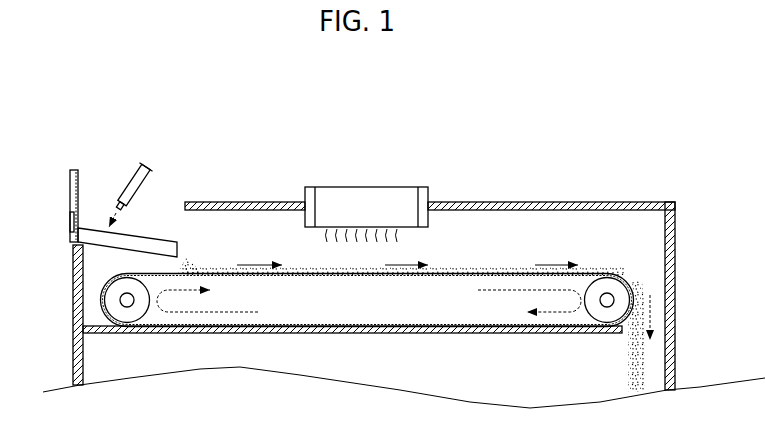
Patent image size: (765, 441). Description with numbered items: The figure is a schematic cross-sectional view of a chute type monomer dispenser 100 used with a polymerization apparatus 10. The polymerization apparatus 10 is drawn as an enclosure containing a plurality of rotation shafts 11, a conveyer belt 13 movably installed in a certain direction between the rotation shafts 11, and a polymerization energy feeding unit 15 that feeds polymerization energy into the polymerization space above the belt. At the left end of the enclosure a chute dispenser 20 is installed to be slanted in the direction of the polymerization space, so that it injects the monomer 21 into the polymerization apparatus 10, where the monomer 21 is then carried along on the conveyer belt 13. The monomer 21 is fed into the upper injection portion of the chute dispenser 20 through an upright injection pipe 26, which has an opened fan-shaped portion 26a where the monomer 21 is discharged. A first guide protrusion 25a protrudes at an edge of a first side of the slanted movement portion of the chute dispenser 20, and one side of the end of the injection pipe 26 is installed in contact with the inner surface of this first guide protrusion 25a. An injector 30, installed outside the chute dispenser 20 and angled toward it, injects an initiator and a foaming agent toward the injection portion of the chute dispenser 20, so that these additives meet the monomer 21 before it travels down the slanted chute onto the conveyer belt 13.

The chute type monomer dispenser 100 is at (104, 172).
The polymerization apparatus 10 is at (516, 251).
The rotation shaft 11 is at (607, 307).
The conveyer belt 13 is at (463, 273).
The polymerization energy feeding unit 15 is at (364, 187).
The chute dispenser 20 is at (99, 257).
The monomer 21 is at (193, 272).
The first guide protrusion 25a is at (156, 240).
The injection pipe 26 is at (70, 186).
The opened fan-shaped portion 26a is at (70, 221).
The injector 30 is at (125, 177).